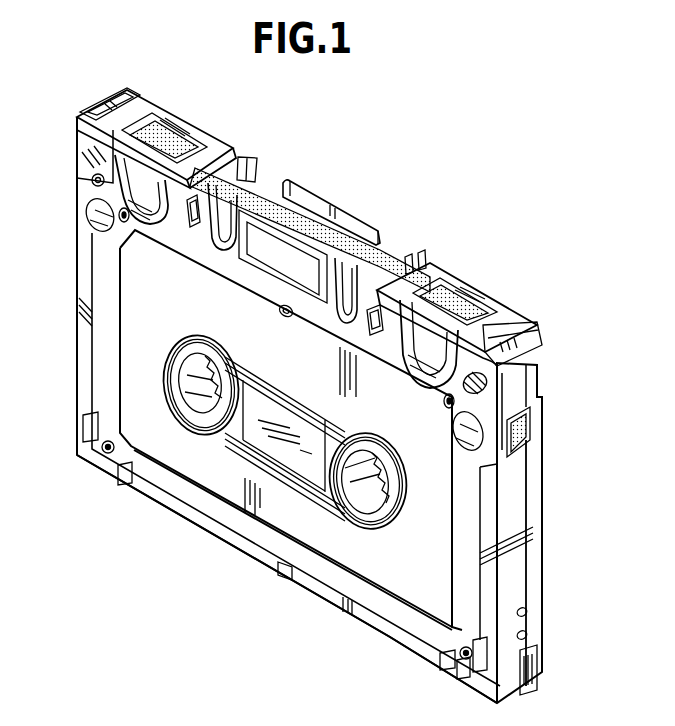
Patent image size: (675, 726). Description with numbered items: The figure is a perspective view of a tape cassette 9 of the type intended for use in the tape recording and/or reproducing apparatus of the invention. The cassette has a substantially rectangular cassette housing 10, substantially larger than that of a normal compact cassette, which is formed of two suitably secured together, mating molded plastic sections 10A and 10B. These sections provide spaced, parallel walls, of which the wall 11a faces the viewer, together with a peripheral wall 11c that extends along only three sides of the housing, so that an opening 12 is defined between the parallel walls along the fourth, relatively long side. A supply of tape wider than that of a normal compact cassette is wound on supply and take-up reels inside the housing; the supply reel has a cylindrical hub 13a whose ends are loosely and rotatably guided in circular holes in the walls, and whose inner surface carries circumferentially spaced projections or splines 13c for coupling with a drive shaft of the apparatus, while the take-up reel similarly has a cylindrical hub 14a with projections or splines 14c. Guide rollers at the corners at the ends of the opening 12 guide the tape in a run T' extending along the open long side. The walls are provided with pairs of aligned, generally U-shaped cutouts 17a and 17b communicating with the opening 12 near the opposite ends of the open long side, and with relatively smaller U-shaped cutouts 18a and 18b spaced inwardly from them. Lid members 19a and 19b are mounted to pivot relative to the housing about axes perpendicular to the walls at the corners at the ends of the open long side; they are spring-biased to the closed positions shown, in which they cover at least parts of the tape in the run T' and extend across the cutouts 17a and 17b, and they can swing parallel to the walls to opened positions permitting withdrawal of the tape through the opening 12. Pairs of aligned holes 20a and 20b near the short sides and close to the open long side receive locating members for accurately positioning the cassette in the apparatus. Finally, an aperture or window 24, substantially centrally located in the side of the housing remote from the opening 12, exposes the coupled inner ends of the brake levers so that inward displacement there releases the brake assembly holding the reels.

The tape cassette 9 is at (567, 385).
The cassette housing 10 is at (552, 568).
The molded plastic section 10A is at (372, 594).
The molded plastic section 10B is at (538, 516).
The wall 11a is at (190, 460).
The peripheral wall 11c is at (535, 615).
The opening 12 is at (337, 220).
The cylindrical hub 13a is at (196, 391).
The projections or splines 13c is at (206, 358).
The cylindrical hub 14a is at (372, 497).
The projections or splines 14c is at (358, 478).
The U-shaped cutout 17a is at (133, 205).
The U-shaped cutout 17b is at (433, 353).
The U-shaped cutout 18a is at (221, 240).
The U-shaped cutout 18b is at (356, 308).
The lid member 19a is at (157, 109).
The lid member 19b is at (475, 292).
The hole 20a is at (106, 218).
The hole 20b is at (487, 452).
The aperture or window 24 is at (290, 576).
The tape run T' is at (310, 214).